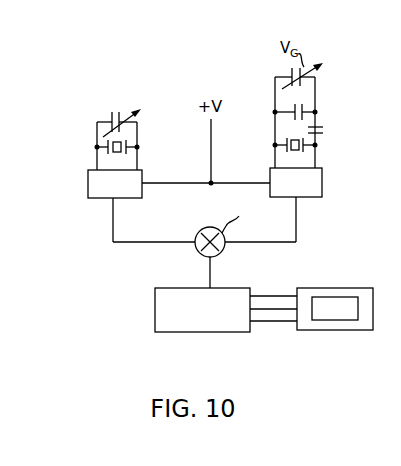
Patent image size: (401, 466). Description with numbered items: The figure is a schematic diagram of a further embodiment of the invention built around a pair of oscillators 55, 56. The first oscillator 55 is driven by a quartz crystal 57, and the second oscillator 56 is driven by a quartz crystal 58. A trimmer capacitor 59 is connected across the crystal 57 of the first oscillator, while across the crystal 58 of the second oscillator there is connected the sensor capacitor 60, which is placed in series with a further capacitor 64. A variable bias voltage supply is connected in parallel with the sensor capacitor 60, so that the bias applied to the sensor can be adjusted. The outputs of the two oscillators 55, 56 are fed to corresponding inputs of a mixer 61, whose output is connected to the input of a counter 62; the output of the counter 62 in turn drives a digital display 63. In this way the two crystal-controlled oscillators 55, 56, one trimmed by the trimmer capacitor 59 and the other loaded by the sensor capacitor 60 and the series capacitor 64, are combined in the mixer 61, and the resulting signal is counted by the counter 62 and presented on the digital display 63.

The oscillator 55 is at (88, 191).
The oscillator 56 is at (322, 194).
The quartz crystal 57 is at (108, 147).
The quartz crystal 58 is at (296, 151).
The trimmer capacitor 59 is at (112, 120).
The sensor capacitor 60 is at (305, 107).
The mixer 61 is at (199, 253).
The counter 62 is at (155, 318).
The digital display 63 is at (356, 288).
The capacitor 64 is at (323, 131).